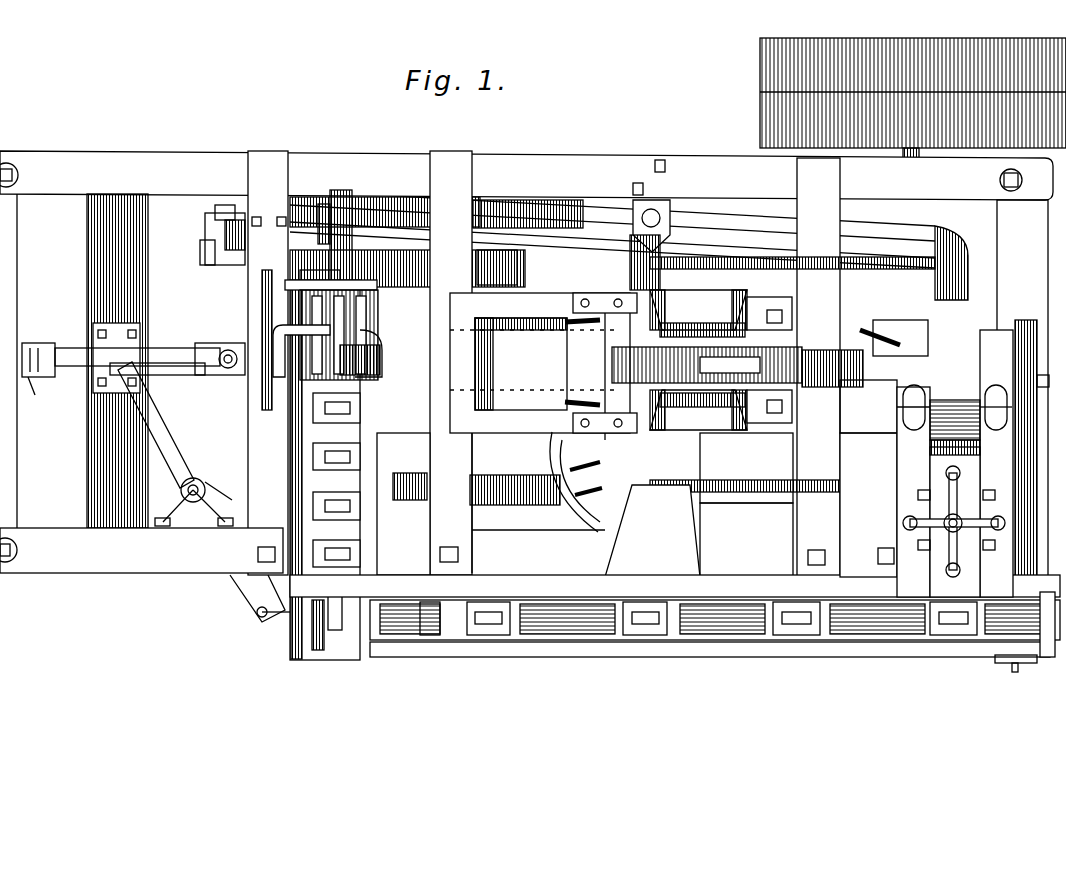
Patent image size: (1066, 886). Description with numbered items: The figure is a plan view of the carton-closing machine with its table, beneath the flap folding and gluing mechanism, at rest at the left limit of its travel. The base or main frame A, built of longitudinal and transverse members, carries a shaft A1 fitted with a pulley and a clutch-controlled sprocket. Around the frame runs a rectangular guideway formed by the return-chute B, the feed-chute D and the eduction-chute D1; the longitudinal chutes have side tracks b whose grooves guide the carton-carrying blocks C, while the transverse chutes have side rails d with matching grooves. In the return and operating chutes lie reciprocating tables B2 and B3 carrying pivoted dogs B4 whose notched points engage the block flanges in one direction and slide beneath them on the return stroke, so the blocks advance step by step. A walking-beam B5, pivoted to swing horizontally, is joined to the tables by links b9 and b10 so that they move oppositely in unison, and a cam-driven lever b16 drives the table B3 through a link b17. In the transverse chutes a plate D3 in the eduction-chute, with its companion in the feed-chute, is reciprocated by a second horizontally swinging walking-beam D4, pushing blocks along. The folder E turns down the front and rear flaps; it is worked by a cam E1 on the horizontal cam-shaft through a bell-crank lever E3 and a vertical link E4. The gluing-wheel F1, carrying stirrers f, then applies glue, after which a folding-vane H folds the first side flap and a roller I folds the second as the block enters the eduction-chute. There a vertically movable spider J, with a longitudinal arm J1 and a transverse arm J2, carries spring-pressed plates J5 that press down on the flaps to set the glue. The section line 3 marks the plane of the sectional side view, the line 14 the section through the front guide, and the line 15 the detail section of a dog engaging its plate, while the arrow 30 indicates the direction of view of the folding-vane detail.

The base or main frame A is at (138, 151).
The shaft A1 is at (912, 205).
The return-chute B is at (695, 657).
The reciprocating table B2 is at (735, 635).
The reciprocating table B3 is at (215, 343).
The dogs B4 is at (535, 635).
The walking-beam B5 is at (180, 435).
The track b is at (552, 577).
The link b9 is at (450, 635).
The link b10 is at (158, 363).
The lever b16 is at (30, 378).
The link b17 is at (70, 348).
The carton-carrying blocks C is at (362, 520).
The feed-chute D is at (320, 662).
The eduction-chute D1 is at (900, 450).
The transverse plate D3 is at (552, 442).
The walking-beam D4 is at (702, 200).
The side rails d is at (362, 459).
The folder E is at (370, 380).
The cam E1 is at (510, 292).
The bell-crank lever E3 is at (205, 244).
The vertical link E4 is at (330, 252).
The gluing-wheel F1 is at (737, 360).
The stirrers f is at (575, 382).
The folding-vane H is at (894, 338).
The roller I is at (996, 463).
The spider J is at (935, 522).
The longitudinal arm J1 is at (930, 542).
The transverse arm J2 is at (975, 544).
The plates J5 is at (940, 487).
The section line 3 is at (1049, 387).
The section line 14 is at (257, 613).
The section line 15 is at (1030, 632).
The view-direction arrow 30 is at (1010, 232).